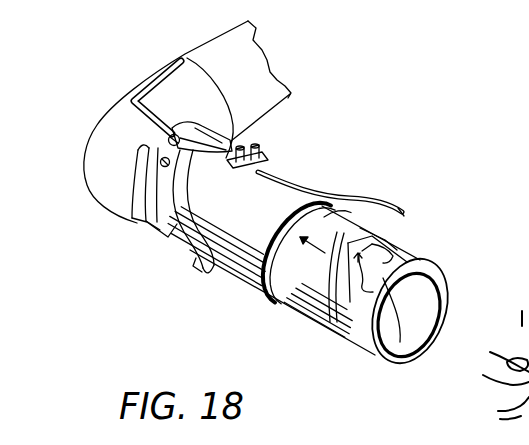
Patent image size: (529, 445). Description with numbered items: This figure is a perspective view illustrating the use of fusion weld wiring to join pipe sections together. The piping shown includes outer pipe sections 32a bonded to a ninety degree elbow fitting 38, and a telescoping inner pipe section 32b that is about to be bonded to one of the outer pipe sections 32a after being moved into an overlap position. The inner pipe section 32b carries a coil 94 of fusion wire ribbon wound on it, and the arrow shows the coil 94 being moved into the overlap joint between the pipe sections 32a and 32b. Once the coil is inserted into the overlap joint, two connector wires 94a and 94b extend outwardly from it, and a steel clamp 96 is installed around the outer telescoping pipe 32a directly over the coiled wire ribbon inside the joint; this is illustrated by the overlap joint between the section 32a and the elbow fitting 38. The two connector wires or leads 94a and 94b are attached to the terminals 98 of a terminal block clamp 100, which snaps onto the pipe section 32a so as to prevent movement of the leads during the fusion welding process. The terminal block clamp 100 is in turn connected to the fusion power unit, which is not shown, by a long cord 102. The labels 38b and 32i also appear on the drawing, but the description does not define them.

The 90° elbow fitting 38 is at (108, 163).
The cover retaining bar 38b is at (163, 62).
The inner tube portion 32i is at (260, 82).
The outer pipe section 32a is at (250, 278).
The inner pipe section 32b is at (405, 263).
The coil of fusion wire ribbon 94 is at (372, 236).
The connector wire 94a is at (168, 200).
The connector wire 94b is at (230, 143).
The steel clamp 96 is at (160, 232).
The terminals 98 is at (260, 155).
The terminal block clamp 100 is at (198, 262).
The cord 102 is at (342, 195).